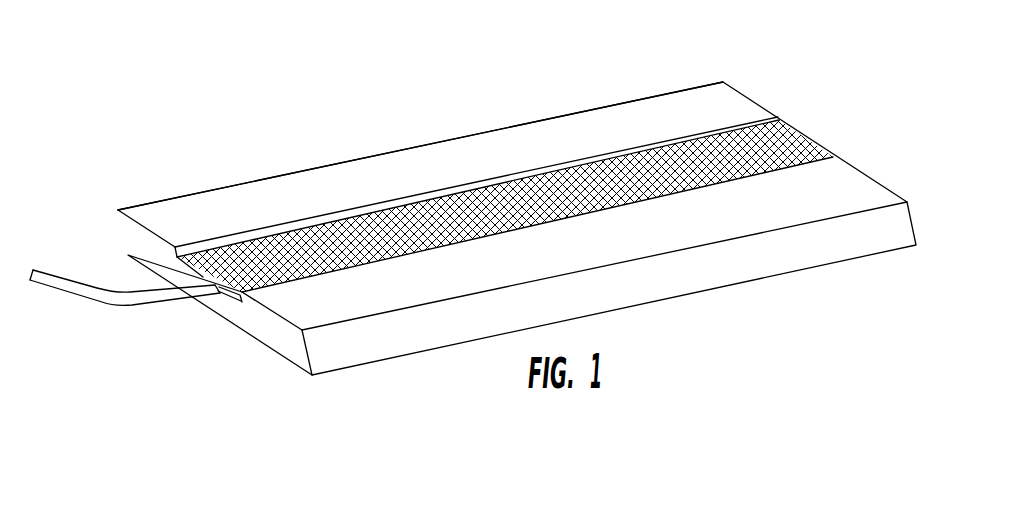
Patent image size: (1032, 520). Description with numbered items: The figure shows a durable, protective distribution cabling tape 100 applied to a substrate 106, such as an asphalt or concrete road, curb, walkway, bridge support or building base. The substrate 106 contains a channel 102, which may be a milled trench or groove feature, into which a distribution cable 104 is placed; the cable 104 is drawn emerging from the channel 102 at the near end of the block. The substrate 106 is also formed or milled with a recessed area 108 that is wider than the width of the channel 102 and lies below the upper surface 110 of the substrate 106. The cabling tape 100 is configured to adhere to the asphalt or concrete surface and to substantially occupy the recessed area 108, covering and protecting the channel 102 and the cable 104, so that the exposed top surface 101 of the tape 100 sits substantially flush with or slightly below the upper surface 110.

The distribution cabling tape 100 is at (312, 243).
The exposed top surface 101 is at (766, 146).
The channel 102 is at (214, 293).
The distribution cable 104 is at (150, 307).
The substrate 106 is at (593, 252).
The recessed area 108 is at (249, 305).
The upper surface 110 is at (535, 141).